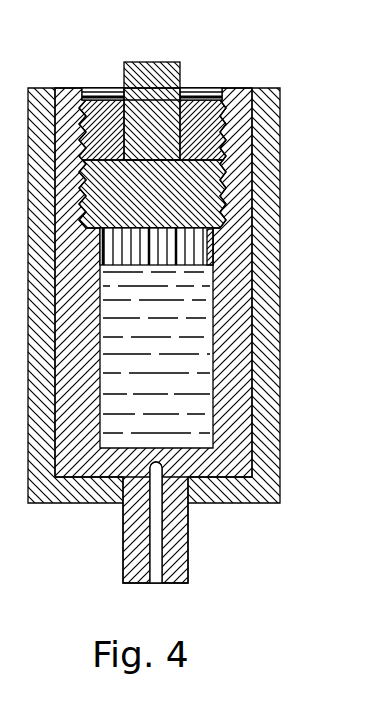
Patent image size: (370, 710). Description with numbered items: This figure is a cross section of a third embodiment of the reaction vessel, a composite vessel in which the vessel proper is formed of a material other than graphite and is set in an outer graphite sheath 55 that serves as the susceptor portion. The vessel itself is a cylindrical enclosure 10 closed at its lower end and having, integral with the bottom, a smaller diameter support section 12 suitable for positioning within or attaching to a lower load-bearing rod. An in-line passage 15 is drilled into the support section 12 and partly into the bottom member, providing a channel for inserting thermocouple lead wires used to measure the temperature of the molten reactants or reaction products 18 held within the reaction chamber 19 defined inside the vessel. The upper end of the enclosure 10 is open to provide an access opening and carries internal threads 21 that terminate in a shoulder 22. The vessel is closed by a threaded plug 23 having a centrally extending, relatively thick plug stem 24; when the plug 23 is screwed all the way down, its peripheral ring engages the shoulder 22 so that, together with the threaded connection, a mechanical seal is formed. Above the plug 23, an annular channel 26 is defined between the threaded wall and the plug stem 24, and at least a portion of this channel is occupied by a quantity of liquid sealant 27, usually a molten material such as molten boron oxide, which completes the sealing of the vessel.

The cylindrical enclosure 10 is at (243, 292).
The support section 12 is at (177, 574).
The passage 15 is at (155, 530).
The molten reactants or reaction products 18 is at (200, 342).
The reaction chamber 19 is at (205, 260).
The internal threads 21 is at (224, 137).
The shoulder 22 is at (223, 250).
The threaded plug 23 is at (210, 205).
The plug stem 24 is at (162, 82).
The annular channel 26 is at (200, 95).
The liquid sealant 27 is at (280, 93).
The graphite sheath 55 is at (260, 380).